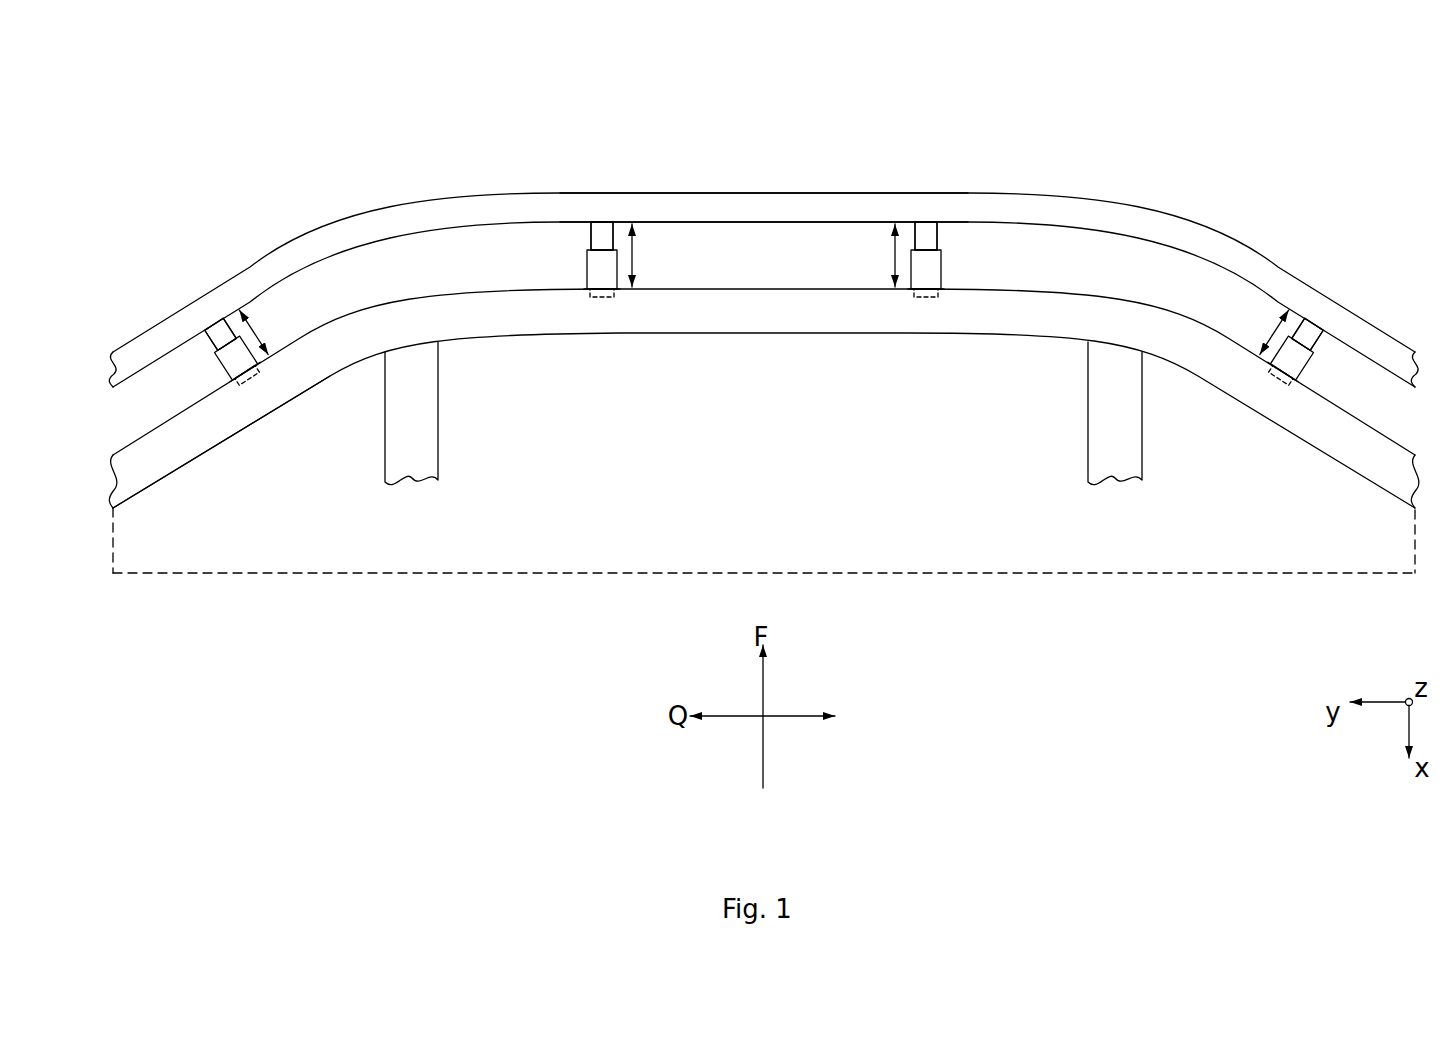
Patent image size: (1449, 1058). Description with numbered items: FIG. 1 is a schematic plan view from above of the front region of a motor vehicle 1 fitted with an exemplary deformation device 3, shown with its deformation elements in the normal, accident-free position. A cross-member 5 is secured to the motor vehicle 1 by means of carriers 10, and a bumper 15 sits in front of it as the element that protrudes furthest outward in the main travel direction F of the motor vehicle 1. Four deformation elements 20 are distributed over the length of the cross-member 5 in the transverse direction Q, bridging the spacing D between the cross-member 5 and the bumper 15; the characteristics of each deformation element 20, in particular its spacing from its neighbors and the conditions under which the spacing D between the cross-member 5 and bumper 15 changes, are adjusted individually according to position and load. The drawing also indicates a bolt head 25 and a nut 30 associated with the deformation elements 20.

The motor vehicle 1 is at (733, 450).
The deformation device 3 is at (424, 198).
The cross-member 5 is at (147, 467).
The carriers 10 is at (402, 467).
The bumper 15 is at (786, 208).
The deformation elements 20 is at (210, 325).
The bolt head 25 is at (218, 337).
The nut 30 is at (250, 377).